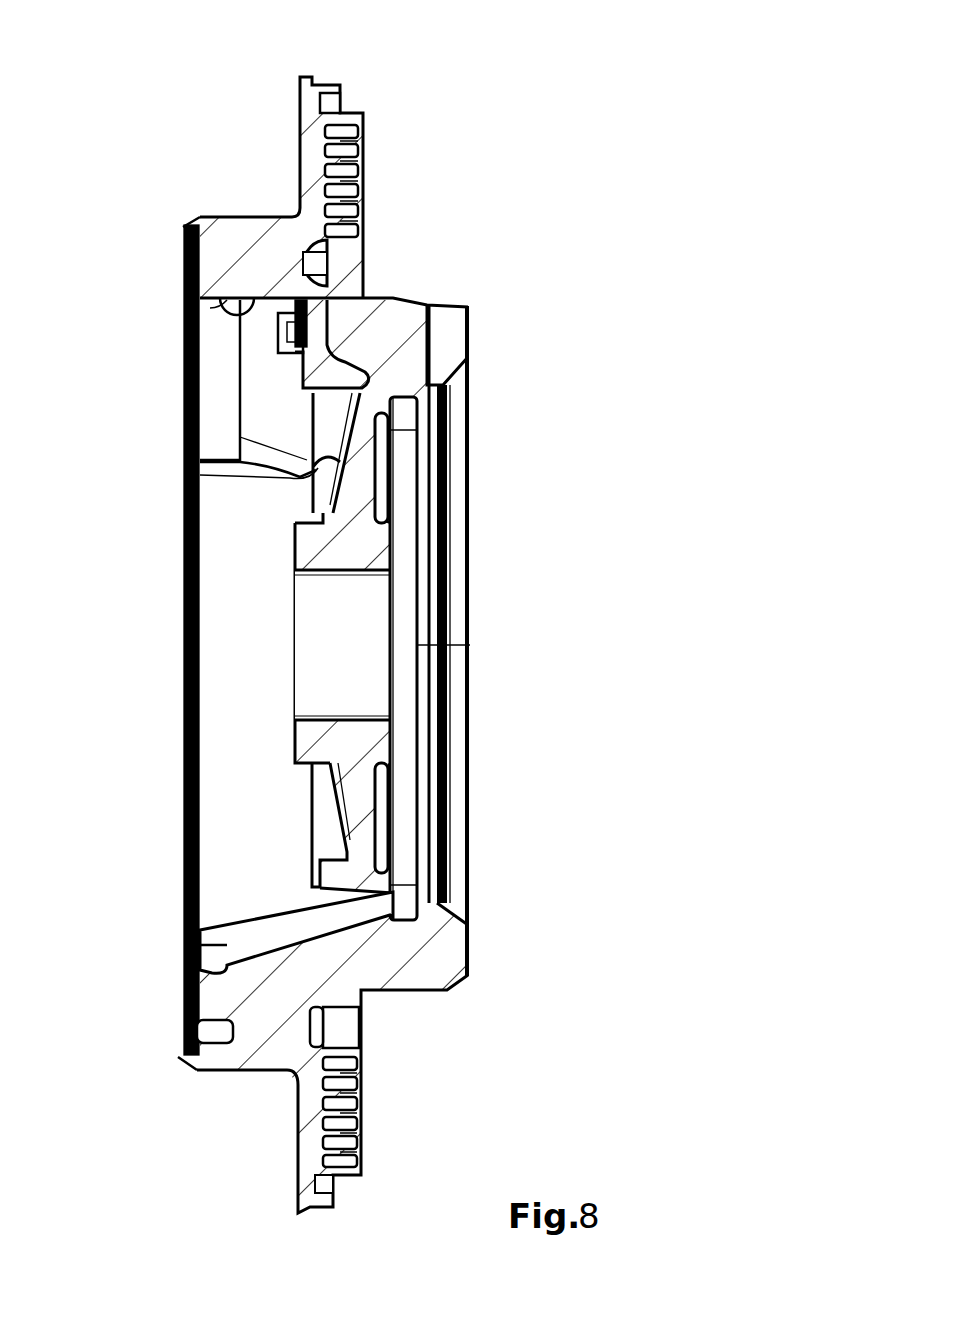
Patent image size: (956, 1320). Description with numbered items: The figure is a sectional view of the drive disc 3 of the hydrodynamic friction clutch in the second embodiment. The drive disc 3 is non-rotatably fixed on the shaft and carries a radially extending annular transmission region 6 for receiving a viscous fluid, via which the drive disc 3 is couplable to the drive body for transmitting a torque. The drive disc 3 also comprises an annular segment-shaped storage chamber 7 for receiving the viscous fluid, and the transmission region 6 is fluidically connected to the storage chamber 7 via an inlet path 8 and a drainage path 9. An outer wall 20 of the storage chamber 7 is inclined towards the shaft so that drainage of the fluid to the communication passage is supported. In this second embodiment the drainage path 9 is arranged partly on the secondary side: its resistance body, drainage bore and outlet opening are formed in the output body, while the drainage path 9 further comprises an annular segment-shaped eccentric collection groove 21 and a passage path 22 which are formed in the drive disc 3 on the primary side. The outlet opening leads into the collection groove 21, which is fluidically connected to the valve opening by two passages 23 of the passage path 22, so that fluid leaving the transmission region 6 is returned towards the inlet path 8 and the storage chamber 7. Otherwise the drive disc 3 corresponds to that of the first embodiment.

The drive disc 3 is at (650, 93).
The transmission region 6 is at (383, 180).
The outer wall 20 is at (260, 317).
The inlet path 8 is at (193, 389).
The storage chamber 7 is at (225, 377).
The collection groove 21 is at (468, 927).
The drainage path 9 is at (402, 745).
The passage path 22 is at (361, 993).
The passages 23 is at (323, 920).